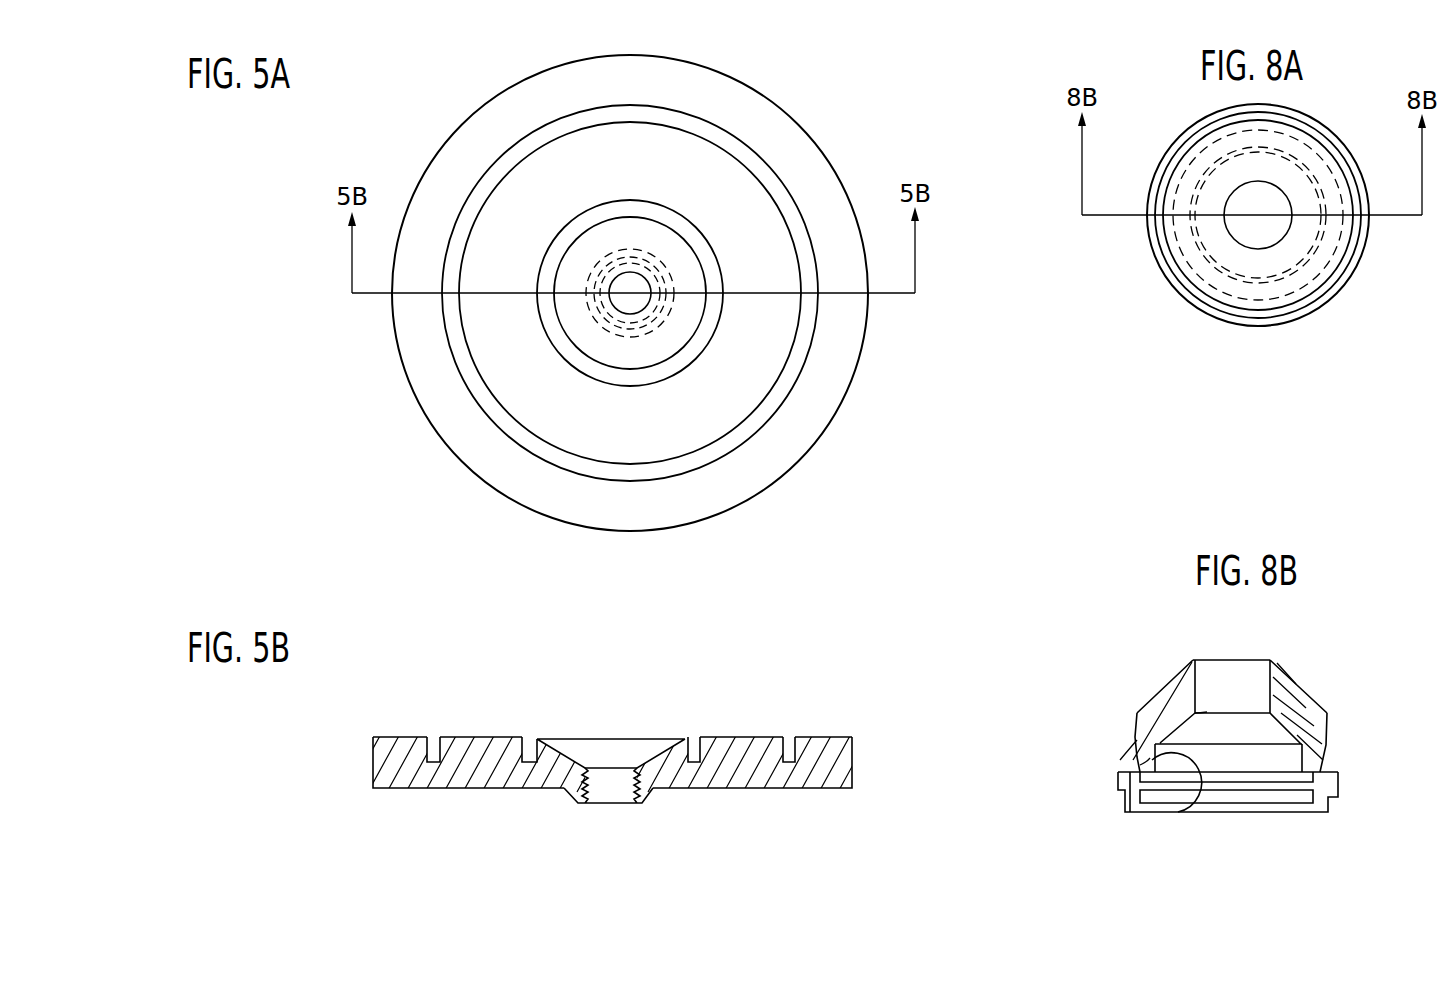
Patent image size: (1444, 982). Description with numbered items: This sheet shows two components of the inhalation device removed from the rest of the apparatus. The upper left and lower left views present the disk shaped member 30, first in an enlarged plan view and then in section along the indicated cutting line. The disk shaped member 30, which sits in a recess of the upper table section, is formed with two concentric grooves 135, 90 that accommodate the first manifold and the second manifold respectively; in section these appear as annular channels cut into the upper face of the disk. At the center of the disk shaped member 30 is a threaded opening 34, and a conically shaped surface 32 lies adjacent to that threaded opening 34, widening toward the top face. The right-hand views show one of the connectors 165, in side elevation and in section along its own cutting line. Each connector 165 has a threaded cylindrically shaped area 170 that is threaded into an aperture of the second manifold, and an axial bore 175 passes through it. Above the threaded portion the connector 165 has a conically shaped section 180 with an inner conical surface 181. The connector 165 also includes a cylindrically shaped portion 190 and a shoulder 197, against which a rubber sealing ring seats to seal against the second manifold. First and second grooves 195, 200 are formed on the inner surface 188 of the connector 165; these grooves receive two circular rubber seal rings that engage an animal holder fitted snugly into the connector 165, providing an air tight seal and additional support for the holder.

In FIG. 5A, the disk shaped member 30 is at (445, 78).
In FIG. 5B, the disk shaped member 30 is at (484, 692).
In FIG. 5B, the conically shaped surface 32 is at (650, 737).
In FIG. 5A, the threaded opening 34 is at (635, 285).
In FIG. 5B, the threaded opening 34 is at (627, 803).
In FIG. 5A, the concentric groove 90 is at (778, 382).
In FIG. 5B, the concentric groove 90 is at (433, 737).
In FIG. 5A, the concentric groove 135 is at (661, 361).
In FIG. 5B, the concentric groove 135 is at (533, 737).
In FIG. 8A, the connector 165 is at (1314, 322).
In FIG. 8B, the connector 165 is at (1345, 680).
In FIG. 8B, the threaded cylindrically shaped area 170 is at (1134, 733).
In FIG. 8A, the axial bore 175 is at (1272, 235).
In FIG. 8B, the axial bore 175 is at (1252, 677).
In FIG. 8B, the conically shaped section 180 is at (1165, 683).
In FIG. 8B, the inner conical surface 181 is at (1193, 727).
In FIG. 8B, the inner surface 188 is at (1178, 812).
In FIG. 8B, the cylindrically shaped portion 190 is at (1135, 766).
In FIG. 8B, the first groove 195 is at (1273, 782).
In FIG. 8B, the shoulder 197 is at (1330, 764).
In FIG. 8B, the second groove 200 is at (1292, 797).